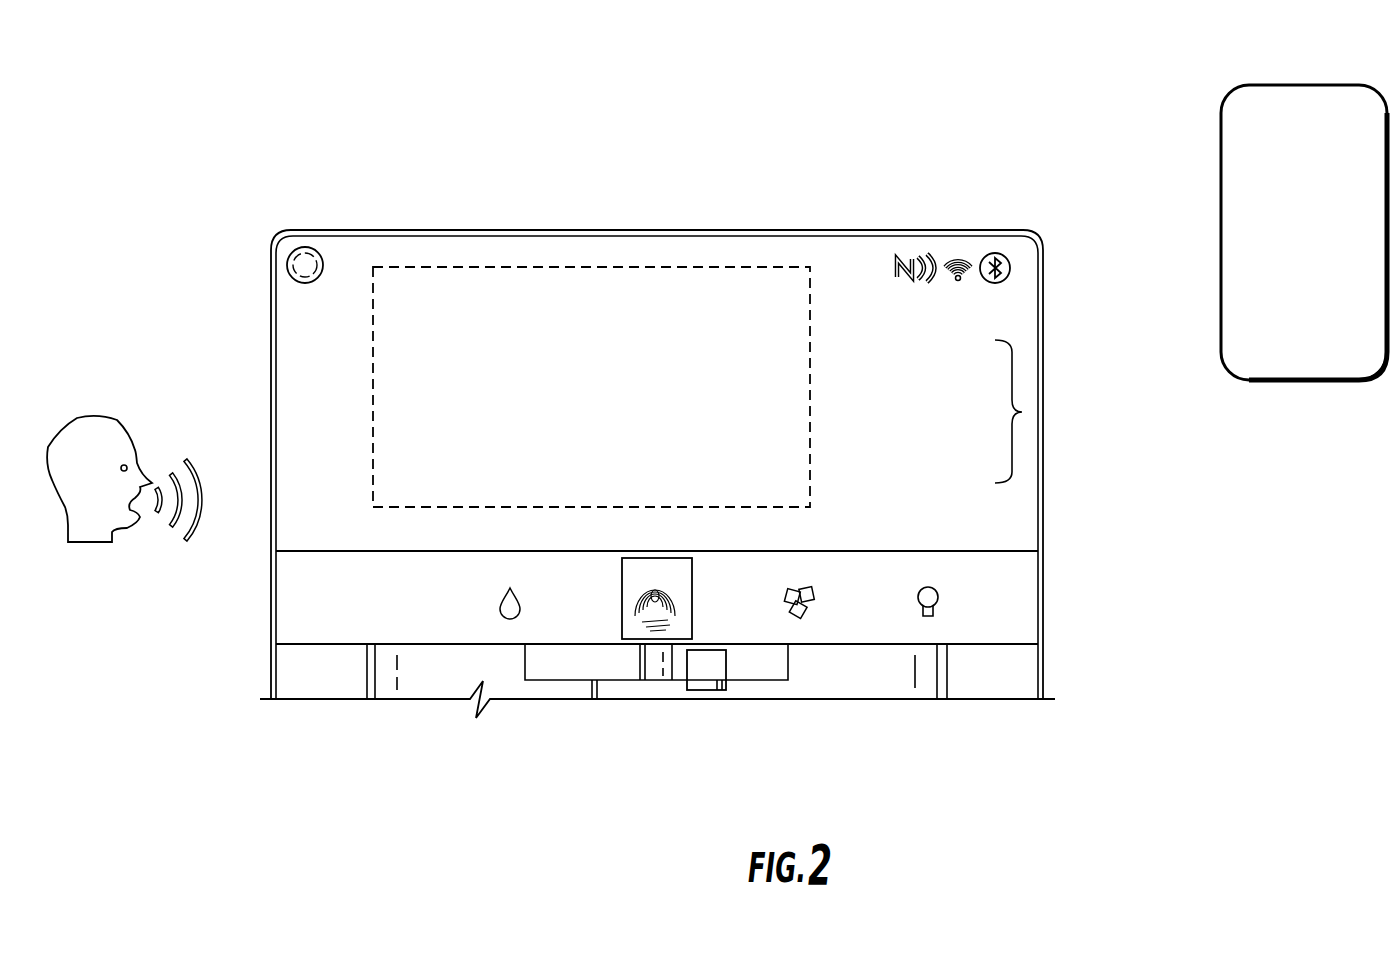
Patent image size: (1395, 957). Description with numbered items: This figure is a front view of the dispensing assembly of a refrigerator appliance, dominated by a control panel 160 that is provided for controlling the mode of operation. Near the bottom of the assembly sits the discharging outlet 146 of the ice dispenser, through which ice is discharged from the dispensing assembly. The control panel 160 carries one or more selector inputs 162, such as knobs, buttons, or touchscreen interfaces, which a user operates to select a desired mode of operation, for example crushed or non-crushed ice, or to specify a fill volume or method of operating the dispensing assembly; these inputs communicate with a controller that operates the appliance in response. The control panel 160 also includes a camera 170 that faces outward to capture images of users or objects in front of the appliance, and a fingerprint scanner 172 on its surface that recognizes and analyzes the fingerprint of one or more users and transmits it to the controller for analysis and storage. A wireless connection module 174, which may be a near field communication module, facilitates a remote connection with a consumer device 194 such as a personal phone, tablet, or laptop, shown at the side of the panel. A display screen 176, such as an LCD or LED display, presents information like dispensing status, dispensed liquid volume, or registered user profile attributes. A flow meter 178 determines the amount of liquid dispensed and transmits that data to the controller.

The discharging outlet 146 is at (649, 698).
The control panel 160 is at (543, 222).
The selector inputs 162 is at (988, 594).
The camera 170 is at (304, 248).
The fingerprint scanner 172 is at (641, 624).
The wireless connection module 174 is at (964, 222).
The display screen 176 is at (372, 350).
The flow meter 178 is at (702, 690).
The consumer device 194 is at (1263, 83).